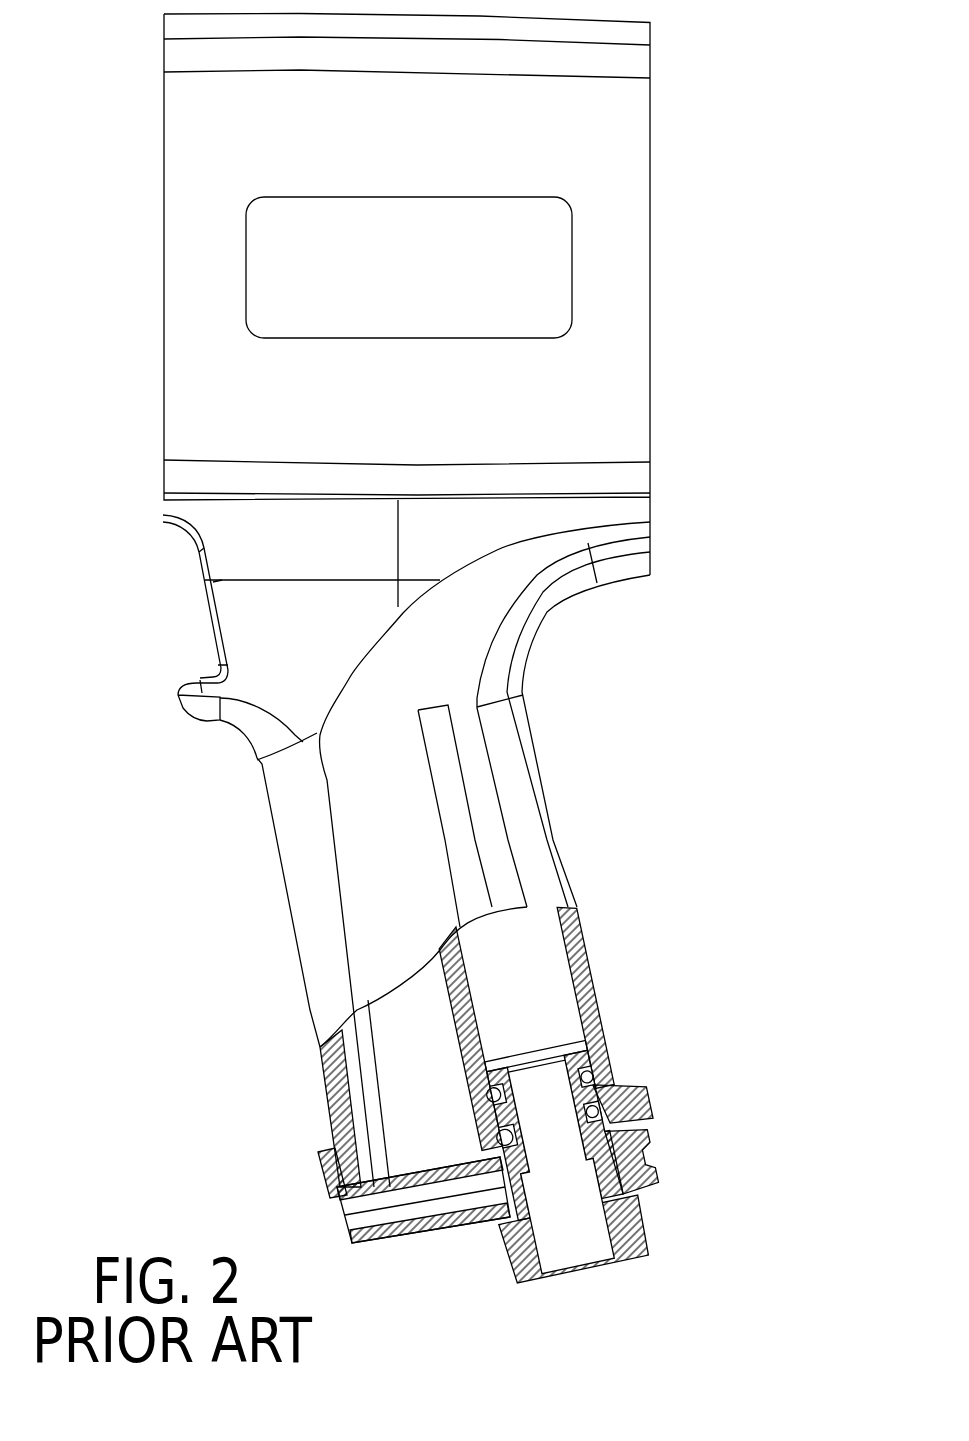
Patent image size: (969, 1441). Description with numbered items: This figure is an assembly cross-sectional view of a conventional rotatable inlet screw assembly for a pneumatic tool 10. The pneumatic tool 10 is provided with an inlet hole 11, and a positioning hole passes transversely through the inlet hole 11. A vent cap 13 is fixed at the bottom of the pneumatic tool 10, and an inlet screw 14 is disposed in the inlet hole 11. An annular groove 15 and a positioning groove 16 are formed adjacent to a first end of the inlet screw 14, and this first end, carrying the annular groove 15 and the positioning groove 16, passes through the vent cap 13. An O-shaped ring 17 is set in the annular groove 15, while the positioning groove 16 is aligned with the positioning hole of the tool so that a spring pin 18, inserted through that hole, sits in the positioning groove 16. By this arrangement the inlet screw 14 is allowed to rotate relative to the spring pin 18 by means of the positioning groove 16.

The pneumatic tool 10 is at (640, 613).
The inlet hole 11 is at (540, 993).
The vent cap 13 is at (660, 1150).
The inlet screw 14 is at (663, 1233).
The annular groove 15 is at (595, 1072).
The positioning groove 16 is at (598, 1113).
The O-shaped ring 17 is at (487, 1092).
The spring pin 18 is at (498, 1133).